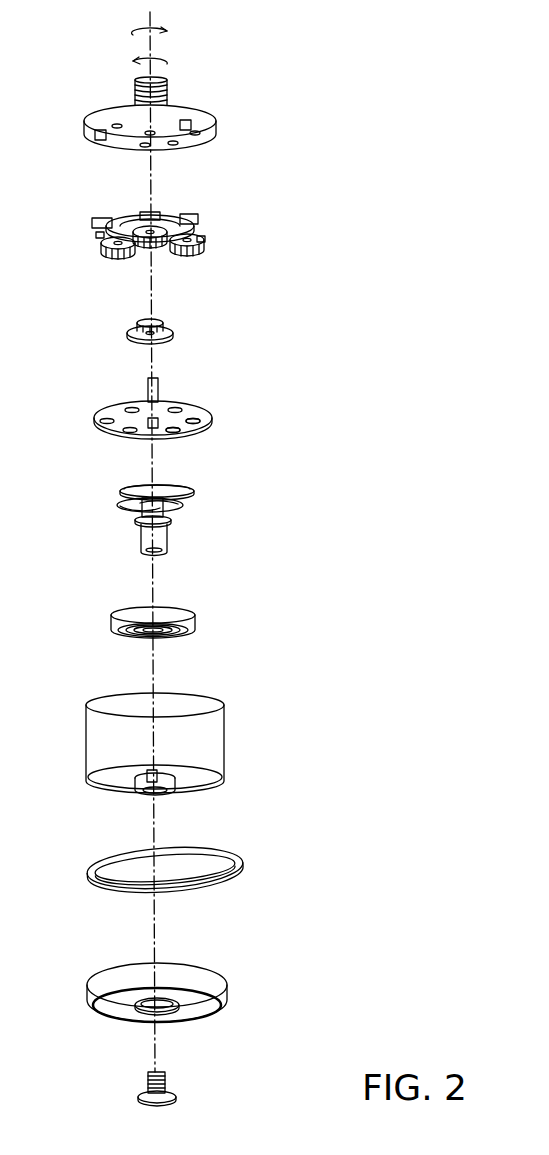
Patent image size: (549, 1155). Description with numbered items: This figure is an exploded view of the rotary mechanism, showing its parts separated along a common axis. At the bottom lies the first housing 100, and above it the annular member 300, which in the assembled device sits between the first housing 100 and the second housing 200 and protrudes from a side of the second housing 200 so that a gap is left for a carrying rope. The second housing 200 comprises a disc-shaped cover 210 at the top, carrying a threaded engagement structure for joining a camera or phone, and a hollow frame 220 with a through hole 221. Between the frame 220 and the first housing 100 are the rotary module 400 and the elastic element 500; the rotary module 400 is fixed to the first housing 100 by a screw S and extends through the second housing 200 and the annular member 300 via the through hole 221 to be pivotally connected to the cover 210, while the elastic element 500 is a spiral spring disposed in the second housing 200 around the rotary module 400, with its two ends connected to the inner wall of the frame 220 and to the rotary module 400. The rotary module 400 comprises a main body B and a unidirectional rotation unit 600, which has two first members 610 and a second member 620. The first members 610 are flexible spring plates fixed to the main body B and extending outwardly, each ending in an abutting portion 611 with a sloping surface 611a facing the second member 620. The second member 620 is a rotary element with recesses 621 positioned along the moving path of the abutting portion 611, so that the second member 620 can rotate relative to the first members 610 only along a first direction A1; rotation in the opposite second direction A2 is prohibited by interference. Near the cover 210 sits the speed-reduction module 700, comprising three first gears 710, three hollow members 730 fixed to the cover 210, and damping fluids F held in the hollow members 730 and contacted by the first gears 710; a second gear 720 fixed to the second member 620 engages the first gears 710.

The first housing 100 is at (220, 990).
The second housing 200 is at (412, 802).
The cover 210 is at (200, 123).
The frame 220 is at (215, 738).
The through hole 221 is at (162, 795).
The annular member 300 is at (243, 867).
The rotary module 400 is at (433, 430).
The elastic element 500 is at (195, 621).
The unidirectional rotation unit 600 is at (375, 472).
The first member 610 is at (118, 509).
The abutting portion 611 is at (130, 492).
The sloping surface 611a is at (128, 488).
The second member 620 is at (205, 418).
The recesses 621 is at (197, 424).
The speed-reduction module 700 is at (407, 312).
The first gears 710 is at (108, 254).
The second gear 720 is at (173, 331).
The hollow members 730 is at (100, 238).
The damping fluids F is at (200, 222).
The main body B is at (146, 541).
The screw S is at (168, 1088).
The first direction A1 is at (172, 60).
The second direction A2 is at (128, 28).